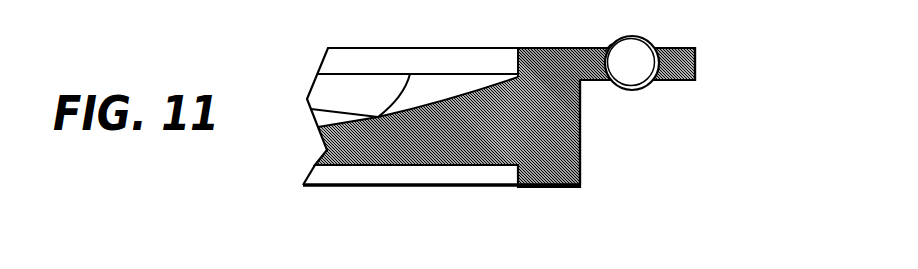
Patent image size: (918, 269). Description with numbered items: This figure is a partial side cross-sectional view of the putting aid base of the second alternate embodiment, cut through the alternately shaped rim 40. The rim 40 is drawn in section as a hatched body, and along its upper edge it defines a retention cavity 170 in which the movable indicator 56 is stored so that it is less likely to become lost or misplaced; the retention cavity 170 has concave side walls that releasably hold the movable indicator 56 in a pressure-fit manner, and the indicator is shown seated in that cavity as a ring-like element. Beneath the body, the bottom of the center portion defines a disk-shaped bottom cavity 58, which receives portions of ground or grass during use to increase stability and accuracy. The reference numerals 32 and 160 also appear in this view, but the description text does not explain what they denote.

The rim 40 is at (548, 47).
The piston 32 is at (581, 172).
The bottom cavity 58 is at (415, 180).
The retaining flange 160 is at (697, 67).
The movable indicator 56 is at (625, 55).
The retention cavity 170 is at (606, 51).